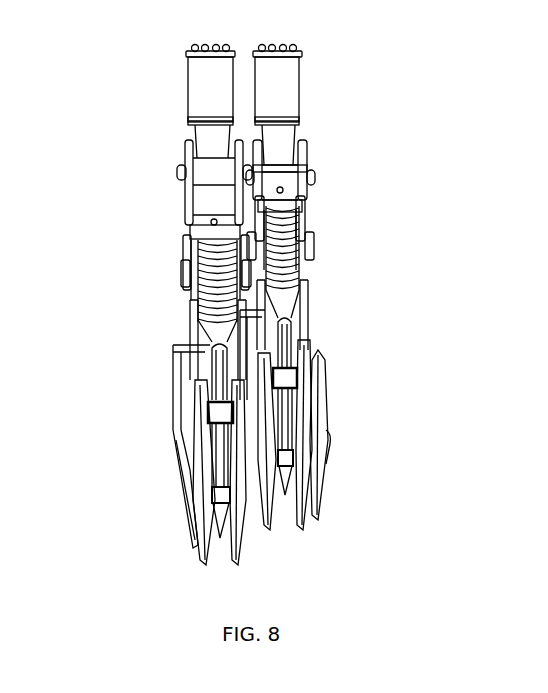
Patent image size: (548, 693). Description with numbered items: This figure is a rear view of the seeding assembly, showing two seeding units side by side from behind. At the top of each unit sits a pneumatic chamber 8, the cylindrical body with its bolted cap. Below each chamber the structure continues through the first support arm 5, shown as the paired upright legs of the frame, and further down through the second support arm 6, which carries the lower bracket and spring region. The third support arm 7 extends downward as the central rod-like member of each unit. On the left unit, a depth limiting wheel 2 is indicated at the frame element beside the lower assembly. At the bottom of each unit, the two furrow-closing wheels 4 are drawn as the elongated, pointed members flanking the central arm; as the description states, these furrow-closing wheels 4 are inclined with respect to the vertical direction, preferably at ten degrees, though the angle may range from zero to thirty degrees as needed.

The depth limiting wheel 2 is at (172, 384).
The furrow-closing wheels 4 is at (190, 482).
The first support arm 5 is at (185, 180).
The second support arm 6 is at (185, 255).
The third support arm 7 is at (215, 365).
The pneumatic chamber 8 is at (210, 91).